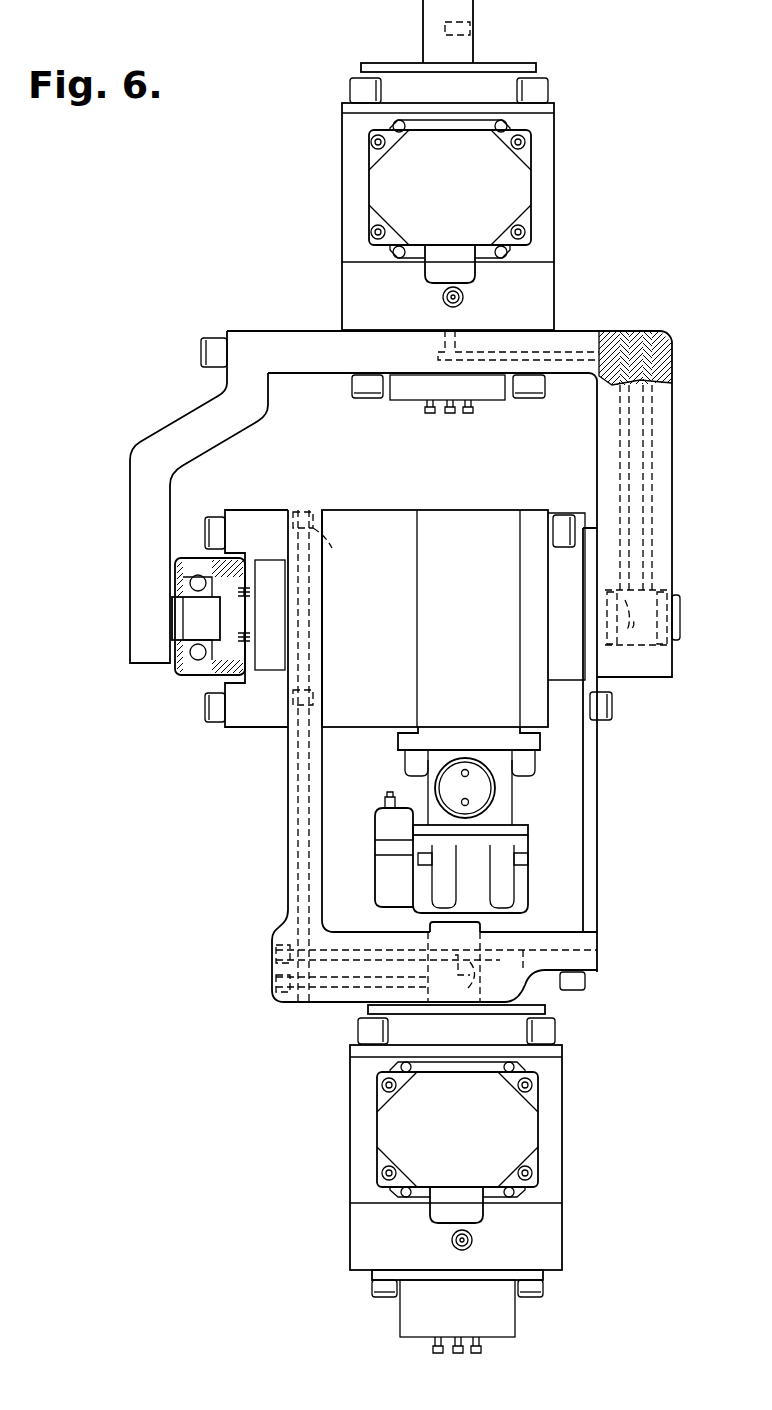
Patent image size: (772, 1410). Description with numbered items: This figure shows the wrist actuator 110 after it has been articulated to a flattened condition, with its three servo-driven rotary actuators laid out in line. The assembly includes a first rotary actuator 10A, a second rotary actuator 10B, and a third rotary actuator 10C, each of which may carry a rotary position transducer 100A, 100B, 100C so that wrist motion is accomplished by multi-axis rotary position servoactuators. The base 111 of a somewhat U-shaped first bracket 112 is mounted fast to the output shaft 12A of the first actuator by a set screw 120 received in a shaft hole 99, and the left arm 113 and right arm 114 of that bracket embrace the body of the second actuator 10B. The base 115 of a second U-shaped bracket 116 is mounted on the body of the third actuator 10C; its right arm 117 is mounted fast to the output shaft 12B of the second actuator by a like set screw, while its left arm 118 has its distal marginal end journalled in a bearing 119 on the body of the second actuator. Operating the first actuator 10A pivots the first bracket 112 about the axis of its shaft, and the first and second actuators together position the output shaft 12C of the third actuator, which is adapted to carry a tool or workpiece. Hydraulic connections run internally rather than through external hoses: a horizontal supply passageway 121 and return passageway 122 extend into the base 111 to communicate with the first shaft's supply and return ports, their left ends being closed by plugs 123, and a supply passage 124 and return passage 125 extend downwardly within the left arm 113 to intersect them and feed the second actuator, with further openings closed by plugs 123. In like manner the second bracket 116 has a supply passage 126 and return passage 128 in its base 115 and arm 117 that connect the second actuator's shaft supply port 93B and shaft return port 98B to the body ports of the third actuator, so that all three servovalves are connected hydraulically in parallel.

The first rotary actuator 10A is at (566, 1137).
The second rotary actuator 10B is at (522, 797).
The third rotary actuator 10C is at (558, 180).
The output shaft 12A is at (445, 928).
The output shaft 12B is at (680, 615).
The output shaft 12C is at (423, 15).
The shaft supply port 93B is at (638, 628).
The shaft return port 98B is at (633, 620).
The shaft hole 99 is at (470, 24).
The rotary position transducer 100A is at (515, 1320).
The rotary position transducer 100B is at (265, 665).
The rotary position transducer 100C is at (400, 400).
The wrist actuator 110 is at (160, 852).
The base 111 is at (335, 1000).
The first bracket 112 is at (288, 877).
The left arm 113 is at (288, 792).
The right arm 114 is at (585, 850).
The base 115 is at (570, 331).
The second bracket 116 is at (676, 428).
The right arm 117 is at (665, 470).
The left arm 118 is at (130, 505).
The bearing 119 is at (195, 672).
The set screw 120 is at (520, 972).
The supply passageway 121 is at (288, 925).
The return passageway 122 is at (282, 993).
The plug 123 is at (644, 331).
The supply passage 124 is at (306, 562).
The return passage 125 is at (306, 697).
The supply passage 126 is at (652, 500).
The return passage 128 is at (620, 457).